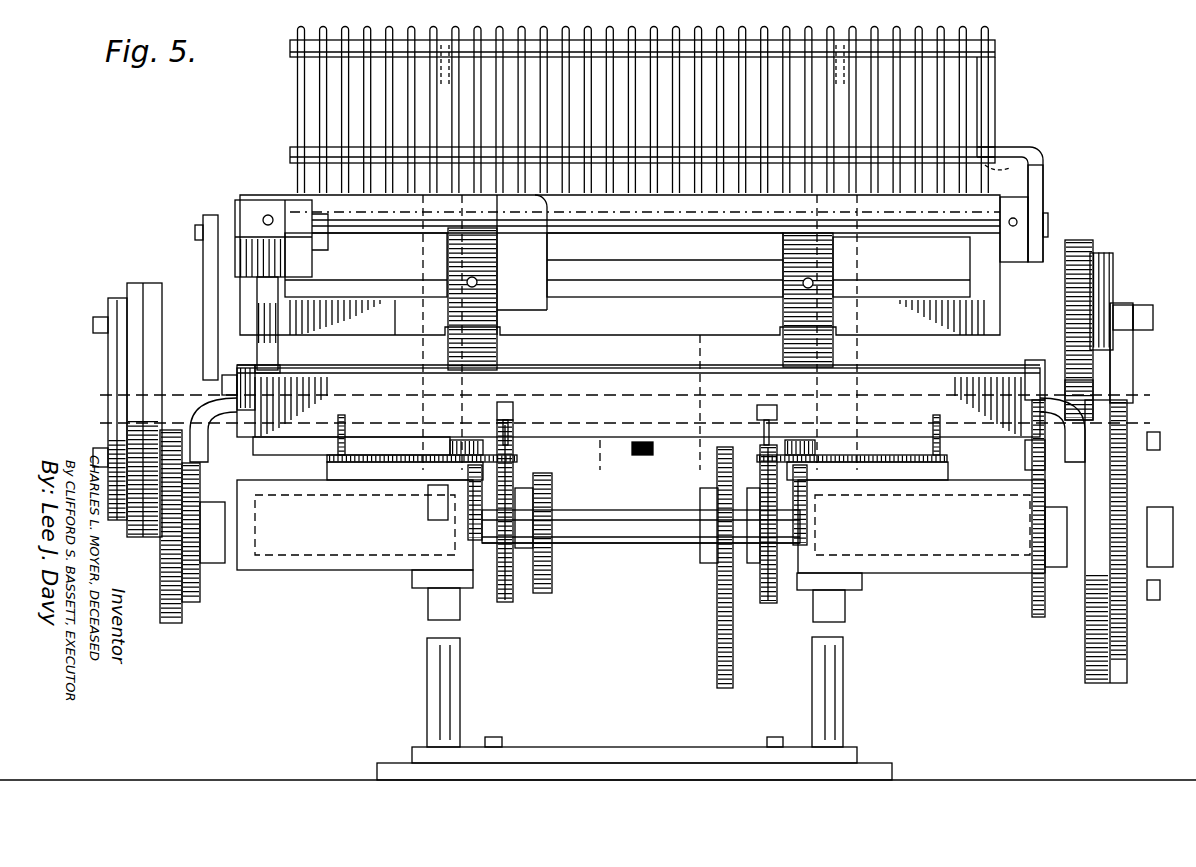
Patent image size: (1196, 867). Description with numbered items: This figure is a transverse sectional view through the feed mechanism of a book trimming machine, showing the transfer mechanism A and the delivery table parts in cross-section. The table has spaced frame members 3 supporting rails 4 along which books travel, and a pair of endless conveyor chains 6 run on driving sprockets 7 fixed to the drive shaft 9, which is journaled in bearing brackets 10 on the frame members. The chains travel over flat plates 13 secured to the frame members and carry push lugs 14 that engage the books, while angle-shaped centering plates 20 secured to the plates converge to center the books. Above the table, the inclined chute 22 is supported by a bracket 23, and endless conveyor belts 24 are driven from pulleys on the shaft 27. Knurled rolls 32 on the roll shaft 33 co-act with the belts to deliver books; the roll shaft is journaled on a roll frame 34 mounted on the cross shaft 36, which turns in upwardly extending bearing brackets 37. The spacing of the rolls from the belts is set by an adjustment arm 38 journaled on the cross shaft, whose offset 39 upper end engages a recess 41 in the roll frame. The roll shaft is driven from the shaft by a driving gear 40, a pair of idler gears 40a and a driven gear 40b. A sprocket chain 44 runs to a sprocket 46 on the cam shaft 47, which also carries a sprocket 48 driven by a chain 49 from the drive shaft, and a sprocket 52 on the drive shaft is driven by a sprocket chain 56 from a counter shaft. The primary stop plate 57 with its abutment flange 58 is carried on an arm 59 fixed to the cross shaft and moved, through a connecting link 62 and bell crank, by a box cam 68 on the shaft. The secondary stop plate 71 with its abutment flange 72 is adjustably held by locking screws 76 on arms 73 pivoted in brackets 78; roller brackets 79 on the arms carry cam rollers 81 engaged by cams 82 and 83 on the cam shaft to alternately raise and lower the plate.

The frame members 3 is at (468, 494).
The rails 4 is at (470, 440).
The endless conveyor chains 6 is at (503, 603).
The driving sprockets 7 is at (515, 588).
The drive shaft 9 is at (625, 511).
The bearing brackets 10 is at (330, 466).
The flat plates 13 is at (385, 463).
The push lugs 14 is at (512, 430).
The centering plates 20 is at (345, 432).
The chute 22 is at (985, 82).
The bracket 23 is at (469, 56).
The endless conveyor belts 24 is at (492, 360).
The shaft 27 is at (100, 385).
The knurled rolls 32 is at (447, 245).
The roll shaft 33 is at (600, 277).
The roll frame 34 is at (722, 221).
The cross shaft 36 is at (1048, 216).
The bearing brackets 37 is at (264, 308).
The adjustment arm 38 is at (1045, 170).
The offset 39 is at (1018, 147).
The driving gear 40 is at (1090, 384).
The idler gears 40a is at (1095, 330).
The driven gear 40b is at (1082, 243).
The recess 41 is at (1032, 152).
The sprocket chain 44 is at (1032, 590).
The sprocket 46 is at (1032, 610).
The cam shaft 47 is at (664, 545).
The sprocket 48 is at (552, 580).
The chain 49 is at (533, 558).
The sprocket 52 is at (717, 468).
The sprocket chain 56 is at (716, 650).
The primary stop plate 57 is at (355, 291).
The abutment flange 58 is at (358, 333).
The arm 59 is at (248, 200).
The connecting link 62 is at (203, 258).
The box cam 68 is at (150, 283).
The secondary stop plate 71 is at (623, 434).
The abutment flange 72 is at (641, 507).
The arms 73 is at (244, 368).
The locking screws 76 is at (222, 385).
The brackets 78 is at (270, 366).
The roller brackets 79 is at (208, 460).
The cam rollers 81 is at (1095, 488).
The cam 82 is at (172, 623).
The cam 83 is at (1086, 678).
The transfer mechanism A is at (1098, 103).